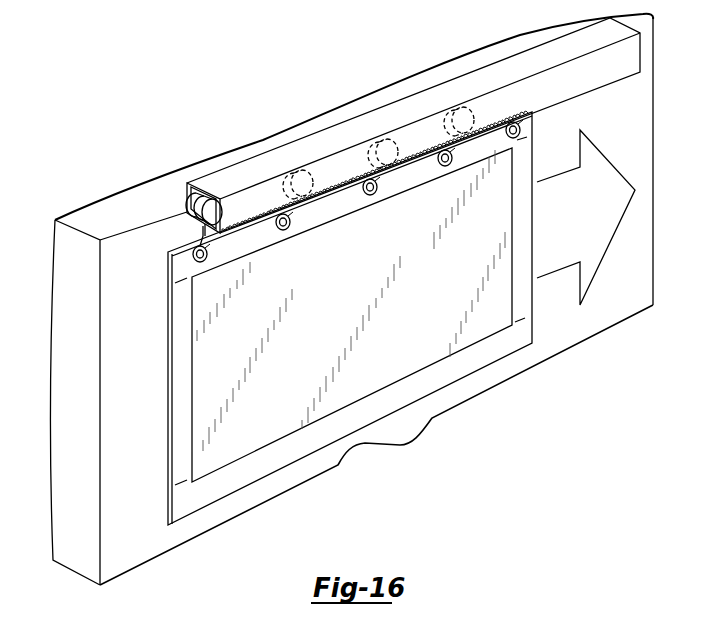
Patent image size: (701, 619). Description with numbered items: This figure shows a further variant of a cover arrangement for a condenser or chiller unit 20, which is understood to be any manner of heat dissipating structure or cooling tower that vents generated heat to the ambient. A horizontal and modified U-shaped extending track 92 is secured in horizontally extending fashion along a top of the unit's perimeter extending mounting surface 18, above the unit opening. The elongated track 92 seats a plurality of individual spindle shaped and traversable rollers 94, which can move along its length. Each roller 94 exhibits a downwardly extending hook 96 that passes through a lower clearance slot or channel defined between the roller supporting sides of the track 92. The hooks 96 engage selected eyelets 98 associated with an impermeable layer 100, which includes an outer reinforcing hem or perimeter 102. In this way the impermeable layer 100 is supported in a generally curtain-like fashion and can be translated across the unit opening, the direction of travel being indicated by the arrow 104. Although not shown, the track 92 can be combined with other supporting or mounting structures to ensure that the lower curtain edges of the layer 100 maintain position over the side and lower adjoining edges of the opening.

The perimeter extending surface 18 is at (143, 555).
The condenser or chiller unit 20 is at (76, 286).
The track 92 is at (543, 98).
The rollers 94 is at (187, 205).
The hook 96 is at (202, 230).
The eyelets 98 is at (208, 256).
The impermeable layer 100 is at (372, 307).
The outer reinforcing hem 102 is at (190, 507).
The arrow 104 is at (595, 250).